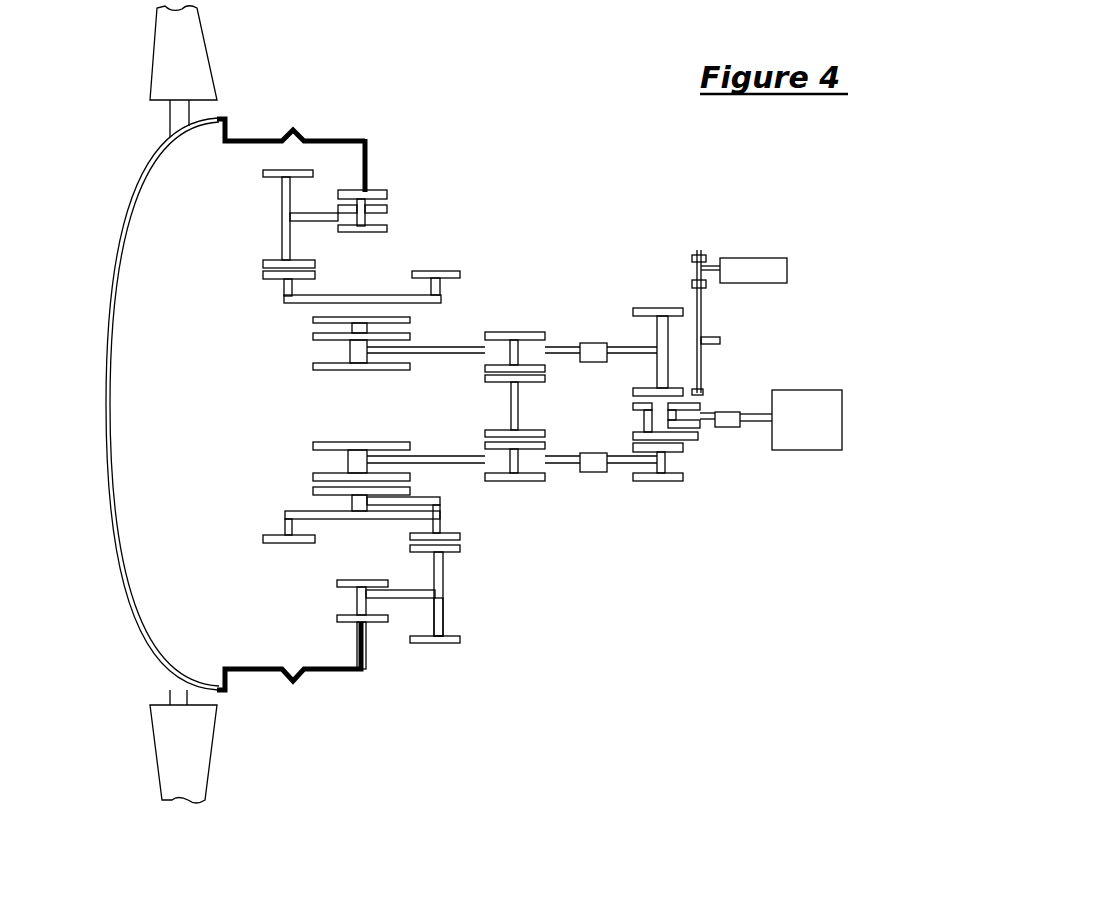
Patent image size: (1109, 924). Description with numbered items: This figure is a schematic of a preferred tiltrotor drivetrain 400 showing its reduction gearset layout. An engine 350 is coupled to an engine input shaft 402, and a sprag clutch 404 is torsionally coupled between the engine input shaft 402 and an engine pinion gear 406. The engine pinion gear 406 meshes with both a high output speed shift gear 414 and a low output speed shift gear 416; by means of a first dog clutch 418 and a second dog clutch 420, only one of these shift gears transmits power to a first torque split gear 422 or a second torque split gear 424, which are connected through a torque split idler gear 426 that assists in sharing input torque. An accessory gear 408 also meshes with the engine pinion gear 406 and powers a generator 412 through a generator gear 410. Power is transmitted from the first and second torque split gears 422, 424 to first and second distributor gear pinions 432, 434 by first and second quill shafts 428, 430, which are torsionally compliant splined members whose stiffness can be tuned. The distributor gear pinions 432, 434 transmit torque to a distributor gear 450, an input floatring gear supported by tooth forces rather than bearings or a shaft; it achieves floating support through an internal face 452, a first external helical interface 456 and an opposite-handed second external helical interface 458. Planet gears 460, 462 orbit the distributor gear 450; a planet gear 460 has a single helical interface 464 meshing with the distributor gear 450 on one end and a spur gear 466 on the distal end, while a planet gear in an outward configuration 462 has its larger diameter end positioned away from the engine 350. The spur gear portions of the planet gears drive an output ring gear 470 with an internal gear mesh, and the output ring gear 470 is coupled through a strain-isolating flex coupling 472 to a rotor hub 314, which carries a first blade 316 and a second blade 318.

The rotor hub 314 is at (128, 232).
The first blade 316 is at (207, 43).
The second blade 318 is at (150, 748).
The engine 350 is at (818, 388).
The tiltrotor drivetrain 400 is at (752, 703).
The engine input shaft 402 is at (748, 425).
The sprag clutch 404 is at (730, 427).
The engine pinion gear 406 is at (698, 440).
The accessory gear 408 is at (697, 390).
The generator gear 410 is at (697, 257).
The generator 412 is at (740, 258).
The high output speed shift gear 414 is at (645, 480).
The low output speed shift gear 416 is at (655, 307).
The first dog clutch 418 is at (593, 472).
The second dog clutch 420 is at (593, 343).
The first torque split gear 422 is at (520, 483).
The second torque split gear 424 is at (512, 332).
The torque split idler gear 426 is at (515, 400).
The first quill shaft 428 is at (428, 458).
The second quill shaft 430 is at (455, 355).
The first distributor gear pinion 432 is at (327, 470).
The second distributor gear pinion 434 is at (340, 342).
The distributor gear 450 is at (272, 313).
The internal face 452 is at (410, 318).
The first external helical interface 456 is at (265, 275).
The second external helical interface 458 is at (418, 268).
The planet gear 460 is at (443, 600).
The planet gear in outward configuration 462 is at (282, 220).
The single helical interface 464 is at (458, 553).
The spur gear 466 is at (350, 604).
The output ring gear 470 is at (368, 153).
The flex coupling 472 is at (293, 128).